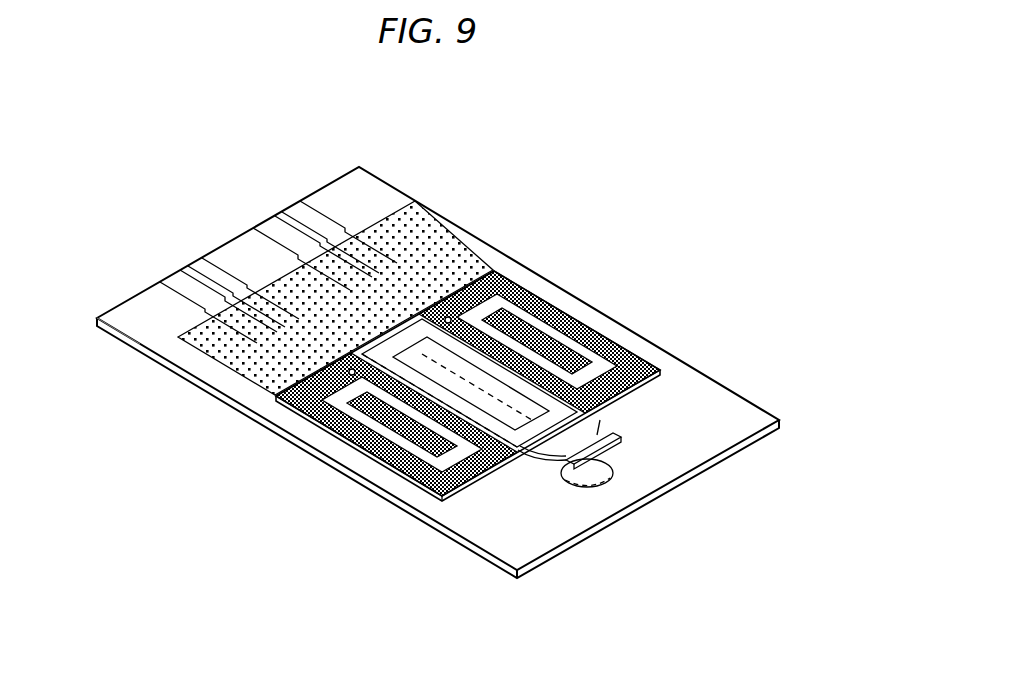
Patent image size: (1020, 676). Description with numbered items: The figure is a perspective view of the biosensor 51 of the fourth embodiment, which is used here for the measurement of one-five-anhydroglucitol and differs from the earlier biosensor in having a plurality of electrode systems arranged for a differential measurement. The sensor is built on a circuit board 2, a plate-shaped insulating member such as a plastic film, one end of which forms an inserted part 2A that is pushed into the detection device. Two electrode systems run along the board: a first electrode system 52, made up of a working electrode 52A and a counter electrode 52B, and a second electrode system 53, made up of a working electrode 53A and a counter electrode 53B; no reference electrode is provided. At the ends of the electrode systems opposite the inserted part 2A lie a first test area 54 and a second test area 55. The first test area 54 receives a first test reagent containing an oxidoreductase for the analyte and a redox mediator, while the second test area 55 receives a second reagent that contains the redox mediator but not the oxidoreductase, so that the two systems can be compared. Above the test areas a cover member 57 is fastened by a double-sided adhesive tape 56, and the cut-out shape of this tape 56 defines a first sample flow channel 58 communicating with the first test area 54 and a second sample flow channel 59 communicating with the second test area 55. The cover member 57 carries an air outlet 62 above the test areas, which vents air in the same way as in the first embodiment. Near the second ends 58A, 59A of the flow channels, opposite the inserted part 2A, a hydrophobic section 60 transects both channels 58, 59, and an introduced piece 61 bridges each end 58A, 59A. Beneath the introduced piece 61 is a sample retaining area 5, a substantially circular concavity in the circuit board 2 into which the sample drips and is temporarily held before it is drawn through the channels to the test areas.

The circuit board 2 is at (728, 403).
The inserted part 2A is at (140, 328).
The sample retaining area 5 is at (567, 470).
The biosensor 51 is at (532, 233).
The first electrode system 52 is at (190, 178).
The working electrode 52A is at (167, 283).
The counter electrode 52B is at (200, 268).
The second electrode system 53 is at (320, 134).
The working electrode 53A is at (297, 212).
The counter electrode 53B is at (268, 225).
The first test area 54 is at (365, 452).
The second test area 55 is at (507, 360).
The double-sided adhesive tape 56 is at (340, 376).
The cover member 57 is at (440, 468).
The first sample flow channel 58 is at (450, 447).
The end of first sample flow channel 58A is at (495, 450).
The second sample flow channel 59 is at (605, 342).
The end of second sample flow channel 59A is at (630, 418).
The hydrophobic section 60 is at (518, 468).
The introduced piece 61 is at (603, 457).
The air outlet 62 is at (447, 316).